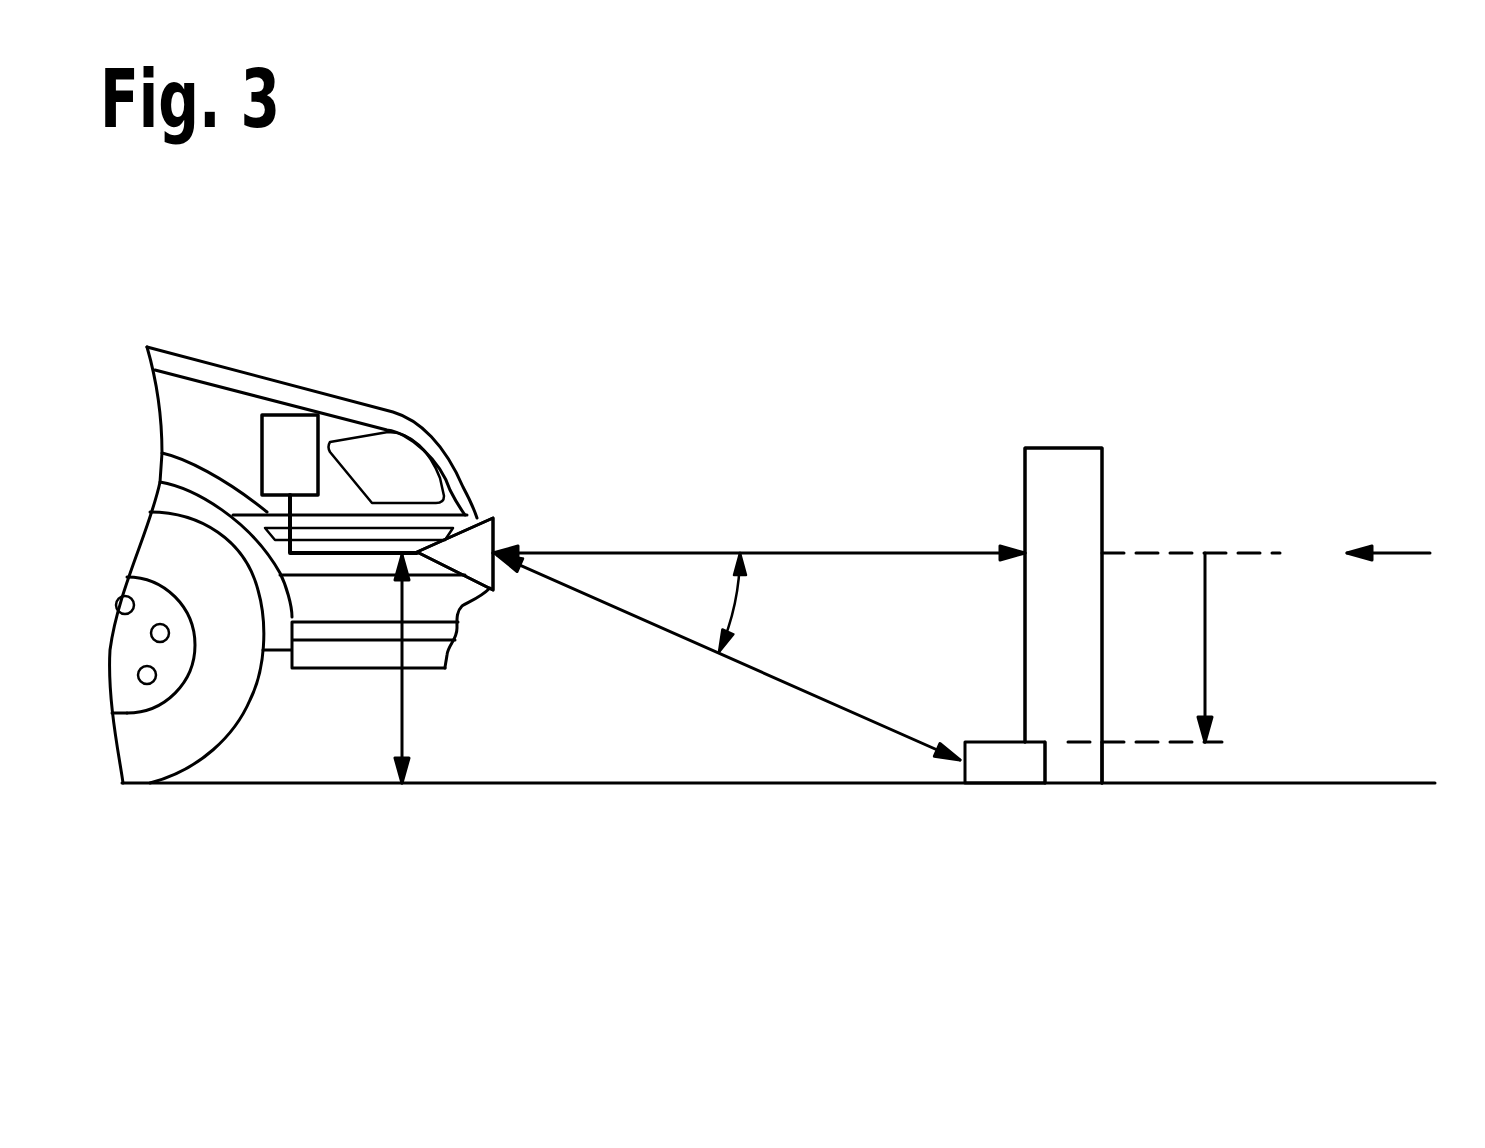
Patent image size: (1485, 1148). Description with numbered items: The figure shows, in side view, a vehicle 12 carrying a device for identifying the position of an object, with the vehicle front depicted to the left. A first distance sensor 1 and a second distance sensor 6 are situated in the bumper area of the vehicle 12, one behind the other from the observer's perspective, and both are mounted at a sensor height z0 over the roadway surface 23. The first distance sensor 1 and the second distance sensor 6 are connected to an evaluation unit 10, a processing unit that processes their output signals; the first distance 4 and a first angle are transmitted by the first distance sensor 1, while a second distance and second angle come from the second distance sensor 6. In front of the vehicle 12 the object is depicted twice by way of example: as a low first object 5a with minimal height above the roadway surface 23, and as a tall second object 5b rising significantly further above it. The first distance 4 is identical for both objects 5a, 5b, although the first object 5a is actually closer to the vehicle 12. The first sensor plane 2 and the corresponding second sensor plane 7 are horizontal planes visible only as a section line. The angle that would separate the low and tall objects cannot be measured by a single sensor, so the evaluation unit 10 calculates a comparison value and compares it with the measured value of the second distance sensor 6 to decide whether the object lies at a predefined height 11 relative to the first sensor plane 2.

The first distance sensor 1 is at (477, 538).
The second distance sensor 6 is at (477, 538).
The first sensor plane 2 is at (1405, 552).
The second sensor plane 7 is at (1405, 552).
The first distance 4 is at (847, 550).
The first object 5a is at (992, 763).
The second object 5b is at (1082, 763).
The evaluation unit 10 is at (290, 415).
The predefined height 11 is at (1205, 653).
The vehicle 12 is at (410, 348).
The roadway surface 23 is at (1348, 785).
The sensor height z0 is at (402, 715).